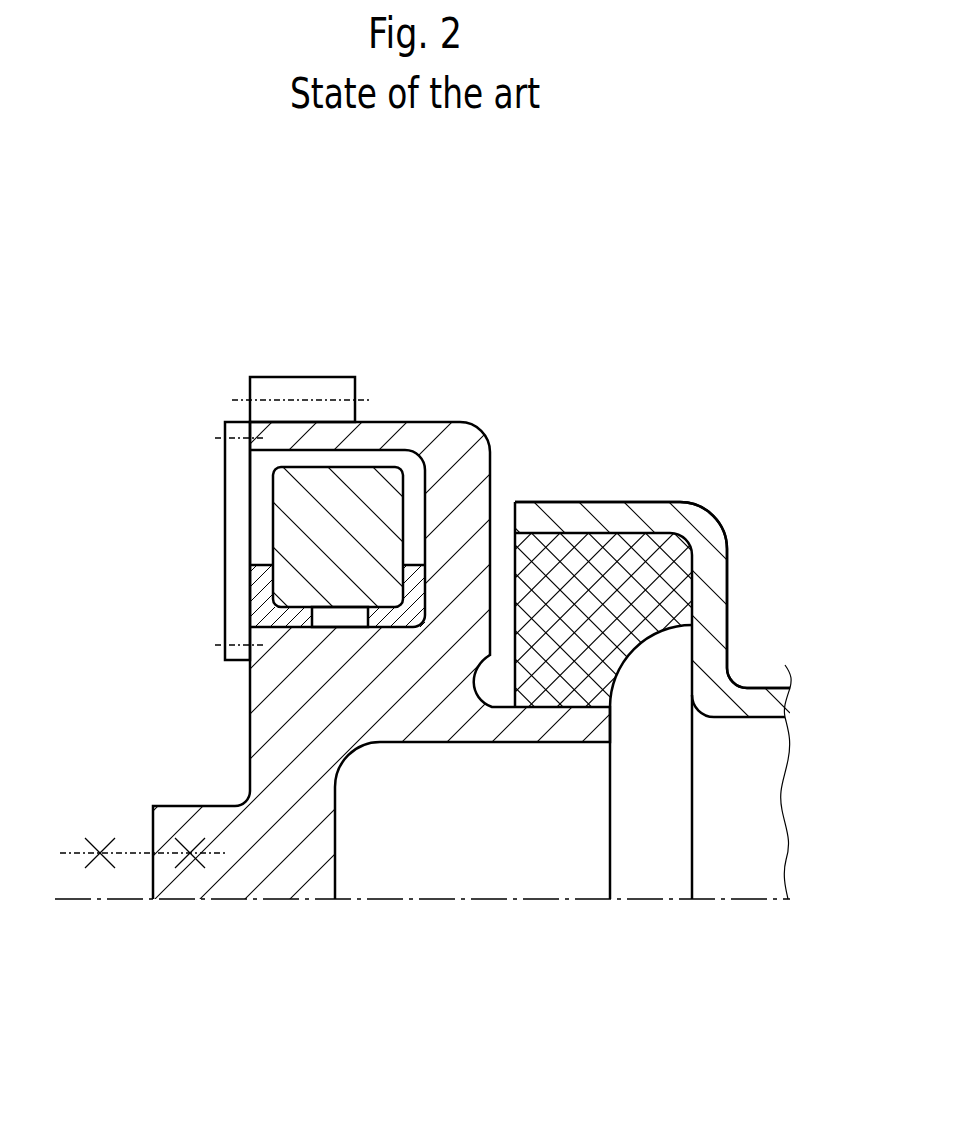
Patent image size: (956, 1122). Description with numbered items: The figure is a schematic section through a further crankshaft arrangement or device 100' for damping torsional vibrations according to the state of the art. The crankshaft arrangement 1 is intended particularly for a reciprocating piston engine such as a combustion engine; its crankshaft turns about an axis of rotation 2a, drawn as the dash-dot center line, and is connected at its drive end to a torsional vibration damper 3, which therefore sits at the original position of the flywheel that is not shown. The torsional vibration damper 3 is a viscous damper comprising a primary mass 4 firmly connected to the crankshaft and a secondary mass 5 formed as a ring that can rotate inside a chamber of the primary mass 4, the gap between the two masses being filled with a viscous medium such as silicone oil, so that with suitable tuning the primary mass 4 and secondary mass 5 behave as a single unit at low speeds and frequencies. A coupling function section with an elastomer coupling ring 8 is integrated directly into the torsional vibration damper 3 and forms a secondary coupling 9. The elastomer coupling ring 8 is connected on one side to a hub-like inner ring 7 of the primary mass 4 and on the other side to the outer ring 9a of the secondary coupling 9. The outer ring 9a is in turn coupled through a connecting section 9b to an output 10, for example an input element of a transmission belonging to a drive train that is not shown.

The device for damping torsional vibrations 100' is at (414, 464).
The crankshaft arrangement 1 is at (152, 992).
The axis of rotation 2a is at (467, 903).
The torsional vibration damper 3 is at (247, 700).
The primary mass 4 is at (262, 728).
The secondary mass 5 is at (372, 508).
The hub-like inner ring 7 is at (572, 727).
The elastomer coupling ring 8 is at (592, 563).
The secondary coupling 9 is at (708, 498).
The outer ring 9a is at (655, 515).
The connecting section 9b is at (712, 572).
The output 10 is at (752, 705).